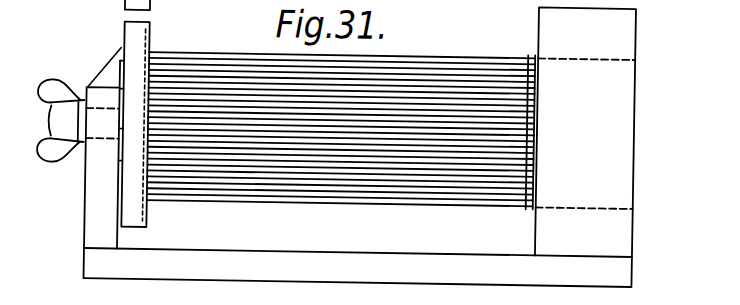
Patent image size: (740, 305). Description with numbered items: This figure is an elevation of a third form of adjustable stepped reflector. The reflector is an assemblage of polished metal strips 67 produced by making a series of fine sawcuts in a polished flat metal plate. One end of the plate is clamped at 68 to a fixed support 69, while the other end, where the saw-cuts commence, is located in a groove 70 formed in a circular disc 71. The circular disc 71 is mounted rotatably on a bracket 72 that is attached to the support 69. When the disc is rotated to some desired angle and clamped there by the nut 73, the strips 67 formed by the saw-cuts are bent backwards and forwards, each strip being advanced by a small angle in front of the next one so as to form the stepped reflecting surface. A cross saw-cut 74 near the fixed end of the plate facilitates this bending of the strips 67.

The polished metal strips 67 is at (407, 78).
The clamp 68 is at (567, 80).
The fixed support 69 is at (357, 262).
The groove 70 is at (146, 41).
The circular disc 71 is at (137, 37).
The bracket 72 is at (92, 216).
The nut 73 is at (52, 93).
The cross saw-cut 74 is at (524, 200).